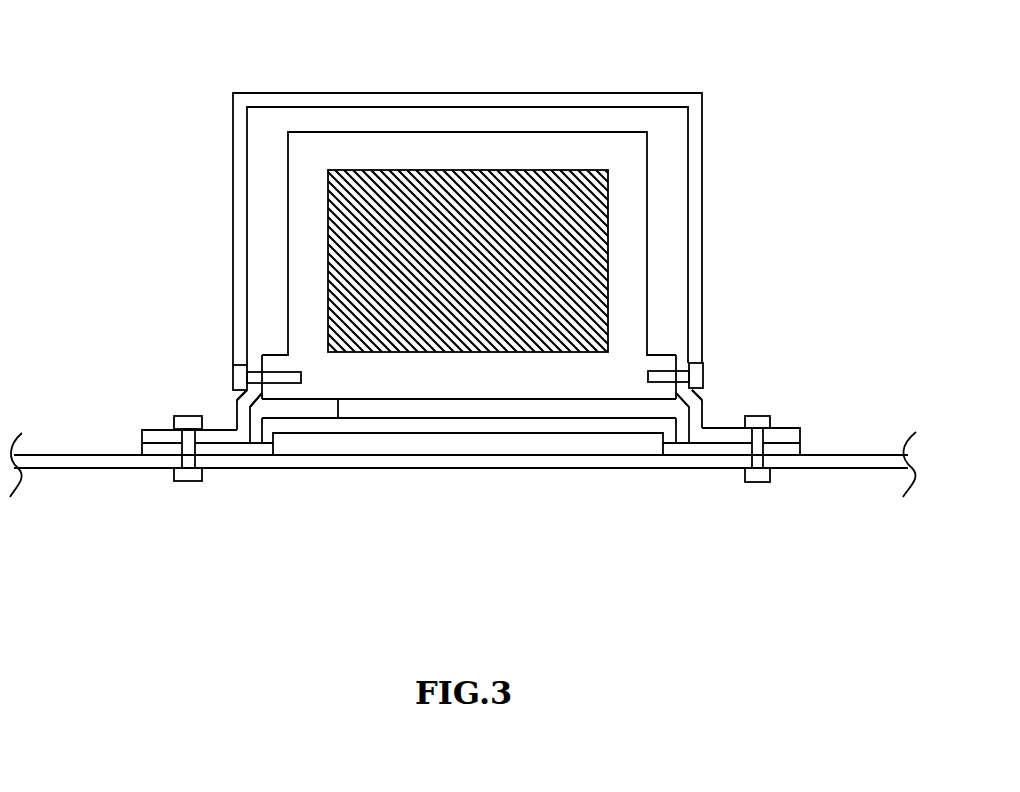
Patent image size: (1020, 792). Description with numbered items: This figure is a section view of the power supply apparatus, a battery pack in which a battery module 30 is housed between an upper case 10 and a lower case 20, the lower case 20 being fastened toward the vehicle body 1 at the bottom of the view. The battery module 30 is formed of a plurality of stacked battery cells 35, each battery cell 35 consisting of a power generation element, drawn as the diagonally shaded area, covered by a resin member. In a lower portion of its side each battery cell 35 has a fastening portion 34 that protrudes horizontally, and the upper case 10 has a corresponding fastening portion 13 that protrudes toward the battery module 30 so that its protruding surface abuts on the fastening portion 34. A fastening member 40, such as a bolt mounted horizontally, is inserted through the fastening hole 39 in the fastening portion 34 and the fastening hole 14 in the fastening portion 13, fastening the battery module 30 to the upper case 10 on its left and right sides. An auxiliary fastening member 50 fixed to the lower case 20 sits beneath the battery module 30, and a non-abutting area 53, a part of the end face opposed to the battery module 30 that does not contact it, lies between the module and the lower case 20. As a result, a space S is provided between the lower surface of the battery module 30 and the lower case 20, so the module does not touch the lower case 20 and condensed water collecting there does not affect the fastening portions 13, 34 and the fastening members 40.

The vehicle body 1 is at (80, 463).
The upper case 10 is at (226, 215).
The fastening portion 13 is at (251, 362).
The fastening hole 14 is at (469, 398).
The lower case 20 is at (366, 440).
The battery module 30 is at (349, 126).
The fastening portion 34 is at (278, 355).
The battery cell 35 is at (440, 147).
The fastening hole 39 is at (258, 392).
The fastening member 40 is at (233, 375).
The auxiliary fastening member 50 is at (606, 406).
The non-abutting area 53 is at (553, 405).
The space S is at (633, 410).